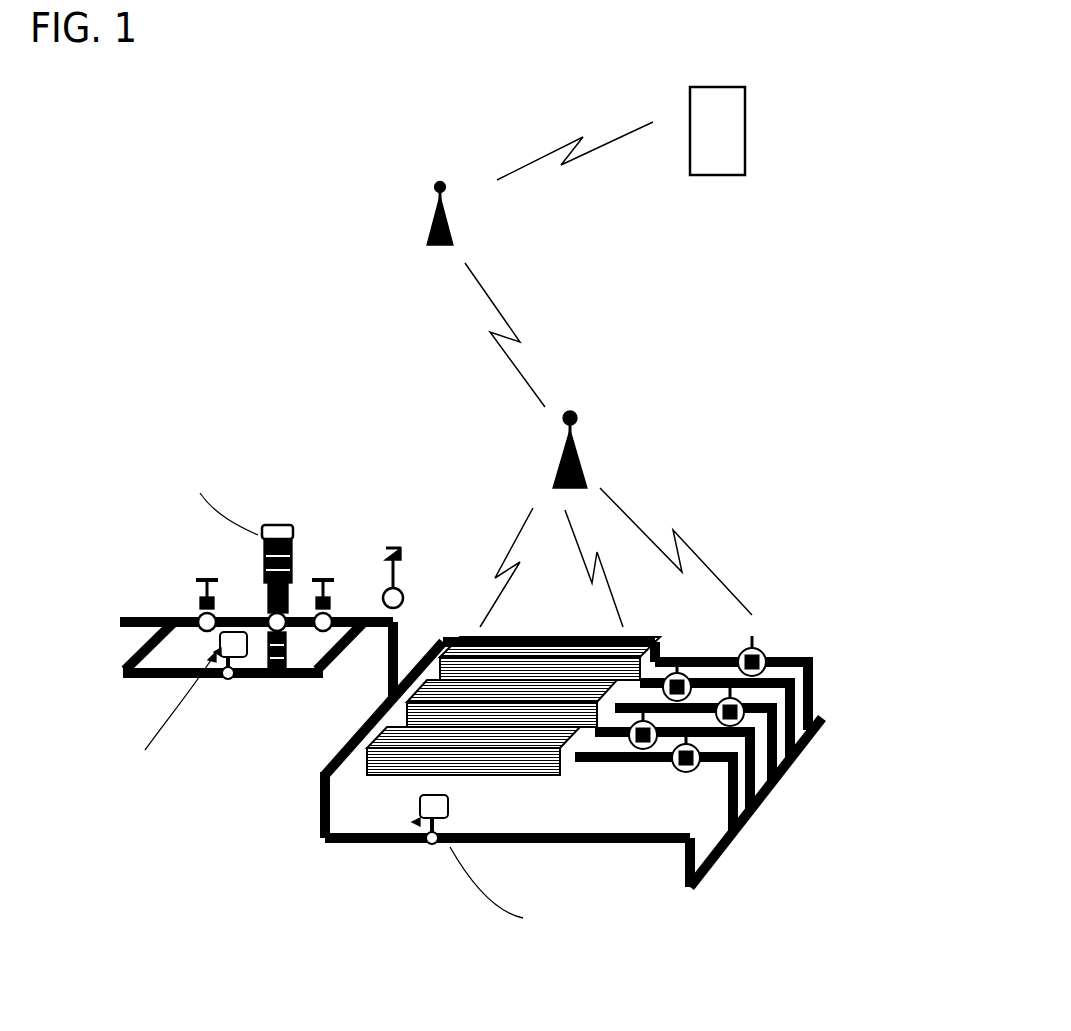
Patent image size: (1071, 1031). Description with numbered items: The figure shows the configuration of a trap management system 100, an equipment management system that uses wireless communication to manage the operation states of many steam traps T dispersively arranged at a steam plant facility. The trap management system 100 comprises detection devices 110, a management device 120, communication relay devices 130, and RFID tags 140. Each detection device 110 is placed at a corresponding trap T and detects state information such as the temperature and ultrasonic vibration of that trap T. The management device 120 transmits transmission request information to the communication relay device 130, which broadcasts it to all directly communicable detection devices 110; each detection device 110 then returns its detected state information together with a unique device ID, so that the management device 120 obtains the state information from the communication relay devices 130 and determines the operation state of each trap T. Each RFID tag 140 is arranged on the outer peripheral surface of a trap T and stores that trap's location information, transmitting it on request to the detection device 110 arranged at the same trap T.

The trap management system 100 is at (317, 327).
The detection device 110 is at (688, 935).
The management device 120 is at (745, 123).
The communication relay device 130 is at (428, 226).
The RFID tag 140 is at (855, 756).
The trap T is at (760, 668).